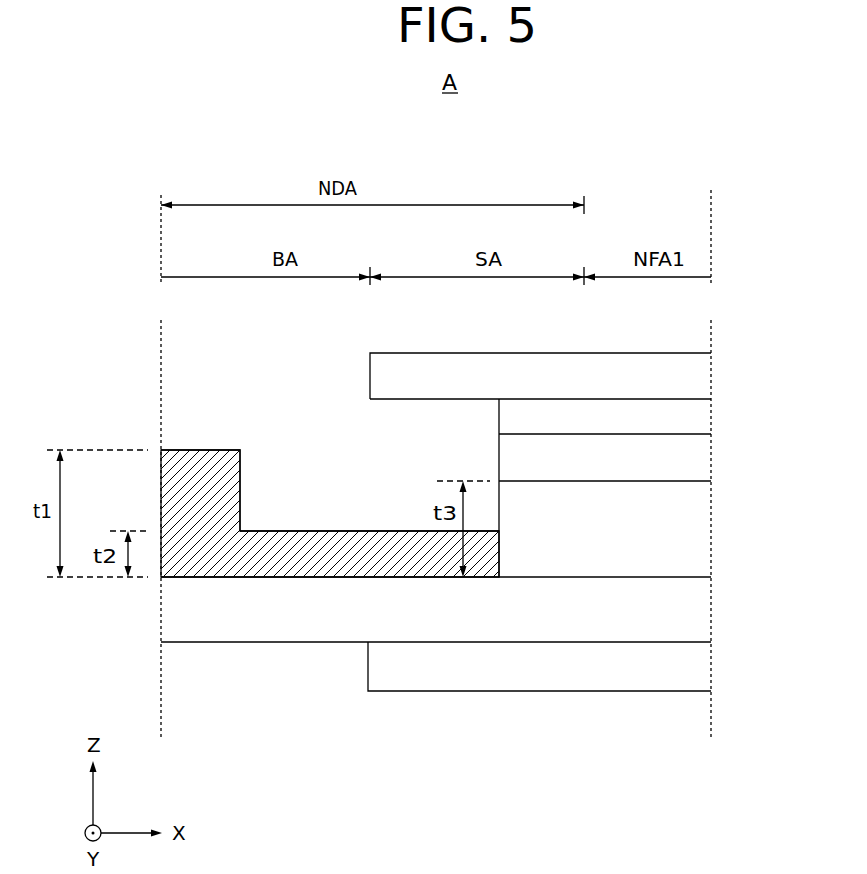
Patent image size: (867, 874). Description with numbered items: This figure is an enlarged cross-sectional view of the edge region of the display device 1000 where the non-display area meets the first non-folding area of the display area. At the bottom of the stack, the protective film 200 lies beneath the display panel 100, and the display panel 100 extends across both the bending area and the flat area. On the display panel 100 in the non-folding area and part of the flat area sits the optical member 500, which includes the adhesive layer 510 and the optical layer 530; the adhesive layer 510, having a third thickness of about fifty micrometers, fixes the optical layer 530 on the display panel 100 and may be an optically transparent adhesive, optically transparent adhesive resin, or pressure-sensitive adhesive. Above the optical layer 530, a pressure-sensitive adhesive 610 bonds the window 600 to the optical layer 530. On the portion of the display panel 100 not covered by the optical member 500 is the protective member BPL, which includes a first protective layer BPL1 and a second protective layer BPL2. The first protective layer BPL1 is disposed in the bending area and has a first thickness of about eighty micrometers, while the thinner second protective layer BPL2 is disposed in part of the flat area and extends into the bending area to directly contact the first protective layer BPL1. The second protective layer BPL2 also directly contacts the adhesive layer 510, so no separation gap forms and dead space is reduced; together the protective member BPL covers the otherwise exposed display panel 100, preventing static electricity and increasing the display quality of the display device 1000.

The display device 1000 is at (751, 191).
The window 600 is at (697, 373).
The pressure-sensitive adhesive 610 is at (697, 412).
The optical layer 530 is at (697, 458).
The adhesive layer 510 is at (697, 513).
The optical member 500 is at (786, 447).
The display panel 100 is at (697, 606).
The protective film 200 is at (697, 670).
The protective member BPL is at (313, 397).
The first protective layer BPL1 is at (218, 458).
The second protective layer BPL2 is at (290, 538).